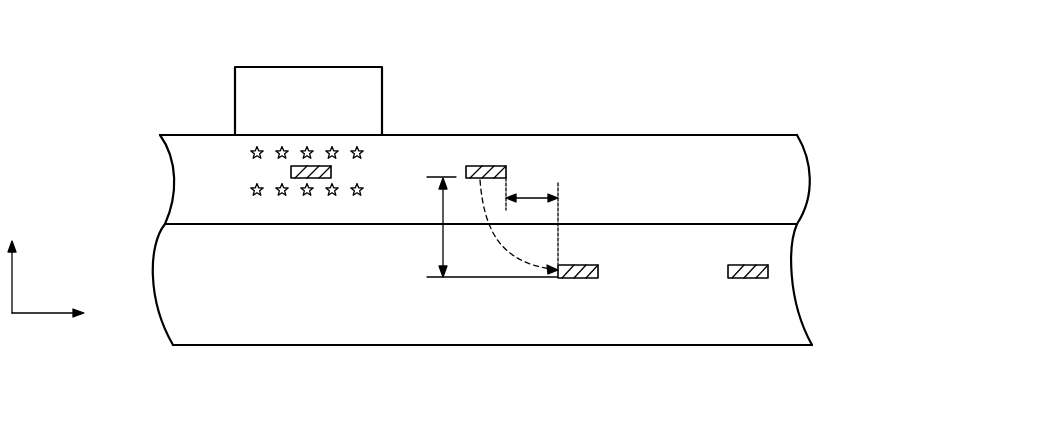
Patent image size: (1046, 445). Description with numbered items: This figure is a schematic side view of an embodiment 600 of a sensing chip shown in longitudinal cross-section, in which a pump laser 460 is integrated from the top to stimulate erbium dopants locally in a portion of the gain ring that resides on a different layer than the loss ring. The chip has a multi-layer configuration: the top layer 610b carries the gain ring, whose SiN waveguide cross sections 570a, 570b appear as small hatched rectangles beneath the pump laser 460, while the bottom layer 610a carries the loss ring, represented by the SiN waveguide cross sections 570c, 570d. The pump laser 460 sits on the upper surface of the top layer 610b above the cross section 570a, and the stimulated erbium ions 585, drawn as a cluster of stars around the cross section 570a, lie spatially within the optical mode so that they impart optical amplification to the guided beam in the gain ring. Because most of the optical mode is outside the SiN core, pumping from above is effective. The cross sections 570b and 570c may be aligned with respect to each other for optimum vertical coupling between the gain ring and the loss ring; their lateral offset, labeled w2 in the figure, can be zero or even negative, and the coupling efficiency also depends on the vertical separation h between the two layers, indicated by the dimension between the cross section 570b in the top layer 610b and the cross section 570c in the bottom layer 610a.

The embodiment 600 is at (128, 64).
The pump laser 460 is at (382, 93).
The stimulated erbium ions 585 is at (363, 155).
The SiN waveguide cross section 570a is at (291, 172).
The SiN waveguide cross section 570b is at (484, 165).
The SiN waveguide cross section 570c is at (580, 279).
The SiN waveguide cross section 570d is at (748, 279).
The bottom layer 610a is at (795, 312).
The top layer 610b is at (805, 170).